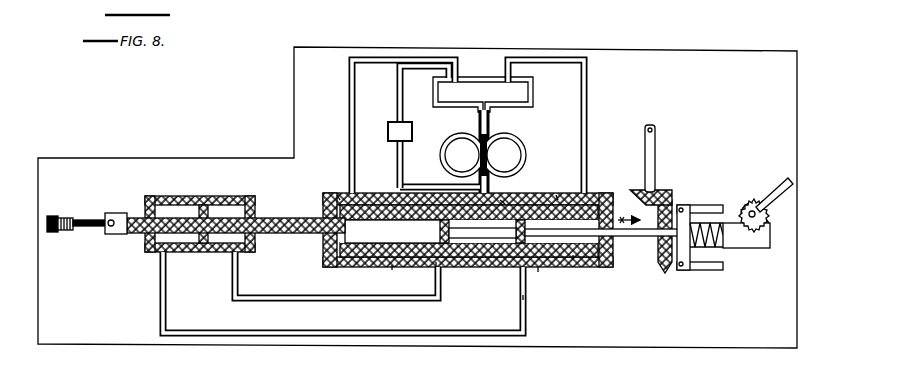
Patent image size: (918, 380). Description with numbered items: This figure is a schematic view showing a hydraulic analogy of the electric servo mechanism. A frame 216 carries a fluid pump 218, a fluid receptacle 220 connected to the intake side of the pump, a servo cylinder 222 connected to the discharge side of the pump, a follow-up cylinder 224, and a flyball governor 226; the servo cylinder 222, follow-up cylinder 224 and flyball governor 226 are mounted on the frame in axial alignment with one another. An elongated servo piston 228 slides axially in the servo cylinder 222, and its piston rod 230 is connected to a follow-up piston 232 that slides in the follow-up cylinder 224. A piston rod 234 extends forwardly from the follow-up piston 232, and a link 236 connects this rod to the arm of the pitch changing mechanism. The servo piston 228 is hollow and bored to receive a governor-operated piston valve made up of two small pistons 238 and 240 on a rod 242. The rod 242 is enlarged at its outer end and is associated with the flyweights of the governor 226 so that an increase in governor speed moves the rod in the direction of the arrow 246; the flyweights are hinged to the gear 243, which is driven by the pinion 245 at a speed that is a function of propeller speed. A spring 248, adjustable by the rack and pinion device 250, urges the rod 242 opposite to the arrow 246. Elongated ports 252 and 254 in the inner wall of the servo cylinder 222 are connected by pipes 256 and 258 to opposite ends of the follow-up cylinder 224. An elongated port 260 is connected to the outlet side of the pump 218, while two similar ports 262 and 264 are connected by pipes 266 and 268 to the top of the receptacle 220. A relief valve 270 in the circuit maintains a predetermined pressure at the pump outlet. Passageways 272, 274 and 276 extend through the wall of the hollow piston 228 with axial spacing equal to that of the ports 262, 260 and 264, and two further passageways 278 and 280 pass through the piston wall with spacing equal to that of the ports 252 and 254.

The frame 216 is at (222, 158).
The fluid pump 218 is at (527, 150).
The fluid receptacle 220 is at (532, 84).
The servo cylinder 222 is at (575, 170).
The follow-up cylinder 224 is at (204, 198).
The flyball governor 226 is at (731, 263).
The servo piston 228 is at (470, 268).
The piston rod 230 is at (292, 233).
The follow-up piston 232 is at (203, 247).
The piston rod 234 is at (138, 234).
The link 236 is at (92, 230).
The small piston 238 is at (392, 270).
The small piston 240 is at (540, 272).
The rod 242 is at (631, 238).
The gear 243 is at (676, 207).
The pinion 245 is at (664, 195).
The arrow 246 is at (630, 214).
The spring 248 is at (690, 248).
The rack and pinion device 250 is at (735, 212).
The elongated port 252 is at (455, 267).
The elongated port 254 is at (514, 268).
The pipe 256 is at (380, 300).
The pipe 258 is at (279, 333).
The elongated port 260 is at (504, 202).
The port 262 is at (337, 195).
The port 264 is at (594, 190).
The pipe 266 is at (350, 101).
The pipe 268 is at (590, 106).
The relief valve 270 is at (399, 122).
The passageway 272 is at (394, 231).
The passageway 274 is at (472, 193).
The passageway 276 is at (573, 258).
The passageway 278 is at (445, 245).
The passageway 280 is at (527, 300).